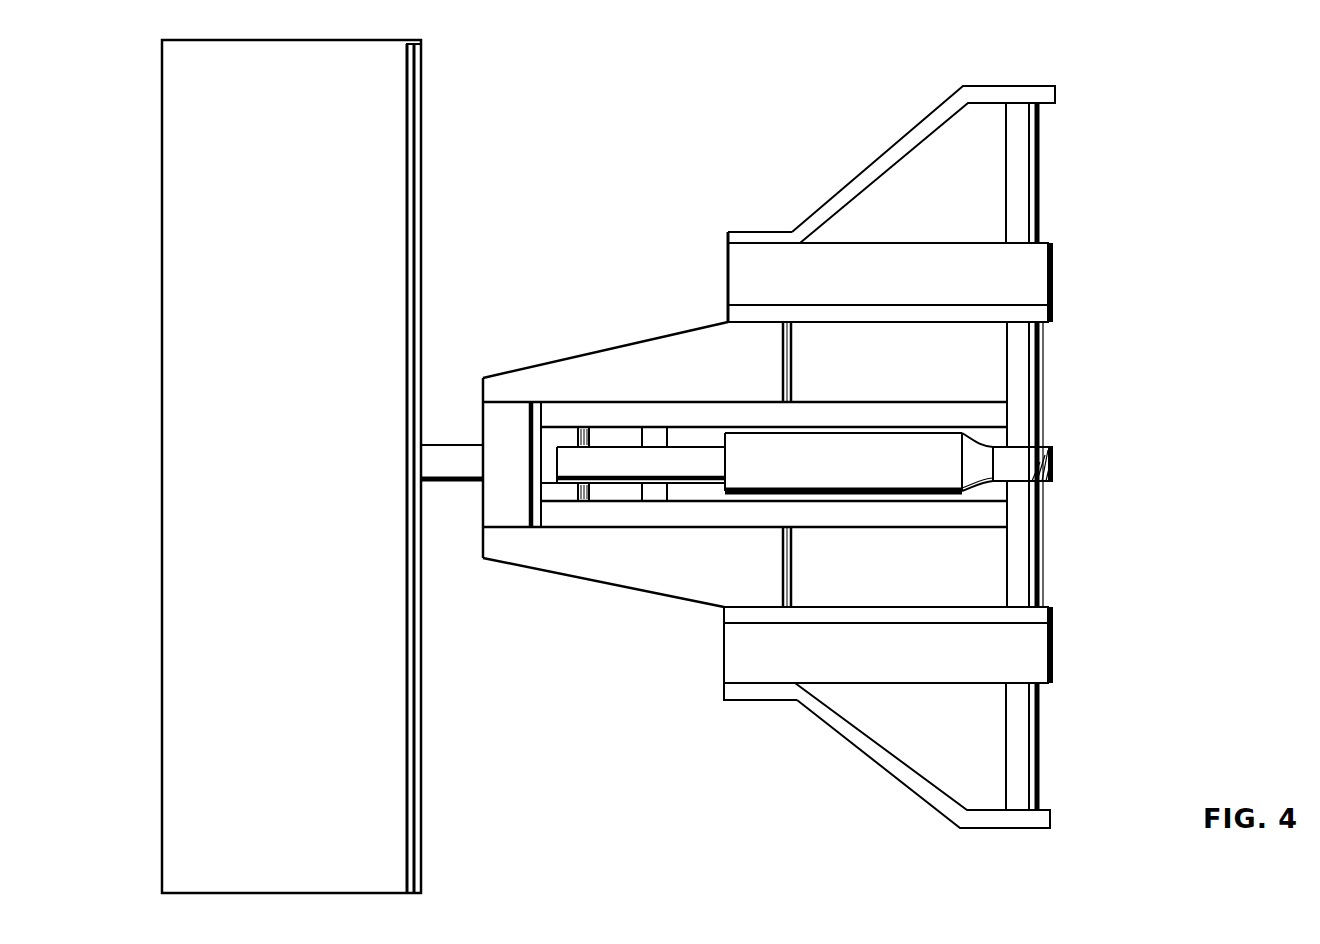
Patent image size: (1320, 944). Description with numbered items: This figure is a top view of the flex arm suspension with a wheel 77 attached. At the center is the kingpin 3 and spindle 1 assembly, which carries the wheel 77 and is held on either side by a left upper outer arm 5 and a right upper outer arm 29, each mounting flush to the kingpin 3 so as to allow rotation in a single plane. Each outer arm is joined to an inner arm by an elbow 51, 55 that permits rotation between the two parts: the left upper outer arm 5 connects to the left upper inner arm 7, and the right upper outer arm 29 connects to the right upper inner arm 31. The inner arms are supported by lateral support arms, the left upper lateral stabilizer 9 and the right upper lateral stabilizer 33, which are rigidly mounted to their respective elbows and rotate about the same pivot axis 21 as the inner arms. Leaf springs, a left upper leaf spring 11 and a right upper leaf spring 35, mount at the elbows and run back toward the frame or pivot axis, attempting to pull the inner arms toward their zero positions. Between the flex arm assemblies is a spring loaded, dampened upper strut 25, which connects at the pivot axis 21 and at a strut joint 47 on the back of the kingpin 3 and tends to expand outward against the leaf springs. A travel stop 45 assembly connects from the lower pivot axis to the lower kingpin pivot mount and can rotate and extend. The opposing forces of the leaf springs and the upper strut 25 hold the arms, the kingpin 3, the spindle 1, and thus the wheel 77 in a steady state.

The spindle 1 is at (442, 460).
The kingpin 3 is at (498, 505).
The left upper outer arm 5 is at (637, 557).
The left upper inner arm 7 is at (943, 612).
The left upper lateral stabilizer 9 is at (910, 770).
The left upper leaf spring 11 is at (743, 652).
The pivot axis 21 is at (1020, 755).
The upper strut 25 is at (847, 460).
The right upper outer arm 29 is at (588, 375).
The right upper inner arm 31 is at (927, 312).
The right upper lateral stabilizer 33 is at (865, 180).
The right upper leaf spring 35 is at (883, 257).
The travel stop 45 is at (692, 418).
The strut joint 47 is at (561, 493).
The elbow 51 is at (753, 238).
The elbow 55 is at (772, 690).
The wheel 77 is at (205, 540).